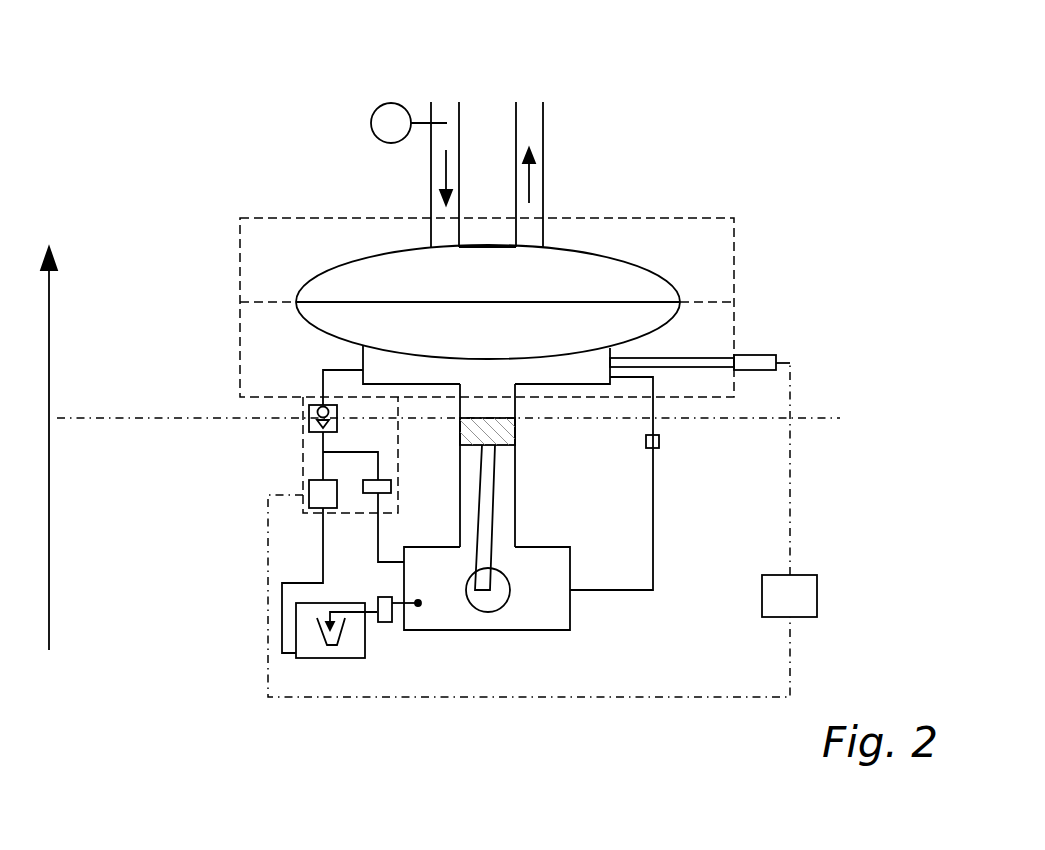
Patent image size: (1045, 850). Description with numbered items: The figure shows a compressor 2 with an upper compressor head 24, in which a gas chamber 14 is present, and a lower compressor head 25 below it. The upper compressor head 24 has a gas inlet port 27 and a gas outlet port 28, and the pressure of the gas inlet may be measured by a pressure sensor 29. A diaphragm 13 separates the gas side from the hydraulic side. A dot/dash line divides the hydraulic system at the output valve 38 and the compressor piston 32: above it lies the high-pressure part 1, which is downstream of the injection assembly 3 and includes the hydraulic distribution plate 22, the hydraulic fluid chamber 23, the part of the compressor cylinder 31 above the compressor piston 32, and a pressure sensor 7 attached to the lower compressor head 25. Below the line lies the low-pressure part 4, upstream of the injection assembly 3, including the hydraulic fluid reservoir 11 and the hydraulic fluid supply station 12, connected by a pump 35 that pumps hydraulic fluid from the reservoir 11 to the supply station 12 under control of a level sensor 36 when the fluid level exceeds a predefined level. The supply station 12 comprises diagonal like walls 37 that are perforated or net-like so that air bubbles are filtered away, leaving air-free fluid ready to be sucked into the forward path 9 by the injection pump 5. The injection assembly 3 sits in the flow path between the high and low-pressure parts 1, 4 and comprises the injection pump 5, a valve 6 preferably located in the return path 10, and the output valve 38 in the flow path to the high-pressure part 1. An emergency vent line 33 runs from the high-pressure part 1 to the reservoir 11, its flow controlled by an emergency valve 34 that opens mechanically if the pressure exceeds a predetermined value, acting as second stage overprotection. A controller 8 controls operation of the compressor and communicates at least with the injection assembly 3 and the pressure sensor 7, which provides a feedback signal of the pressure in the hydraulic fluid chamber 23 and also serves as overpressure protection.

The high-pressure part 1 is at (448, 401).
The compressor 2 is at (175, 153).
The injection assembly 3 is at (300, 468).
The low-pressure part 4 is at (436, 530).
The injection pump 5 is at (308, 508).
The valve 6 is at (395, 483).
The pressure sensor 7 is at (740, 352).
The controller 8 is at (803, 588).
The forward path 9 is at (282, 620).
The return path 10 is at (378, 552).
The hydraulic fluid reservoir 11 is at (570, 631).
The hydraulic fluid supply station 12 is at (364, 659).
The diaphragm 13 is at (622, 302).
The gas chamber 14 is at (347, 272).
The hydraulic distribution plate 22 is at (373, 365).
The hydraulic fluid chamber 23 is at (323, 318).
The upper compressor head 24 is at (722, 233).
The lower compressor head 25 is at (722, 315).
The gas inlet port 27 is at (431, 192).
The gas outlet port 28 is at (545, 190).
The pressure sensor 29 is at (393, 103).
The compressor cylinder 31 is at (510, 495).
The compressor piston 32 is at (487, 432).
The emergency vent line 33 is at (653, 525).
The emergency valve 34 is at (659, 445).
The pump 35 is at (385, 623).
The level sensor 36 is at (420, 605).
The diagonal like walls 37 is at (332, 646).
The output valve 38 is at (307, 413).